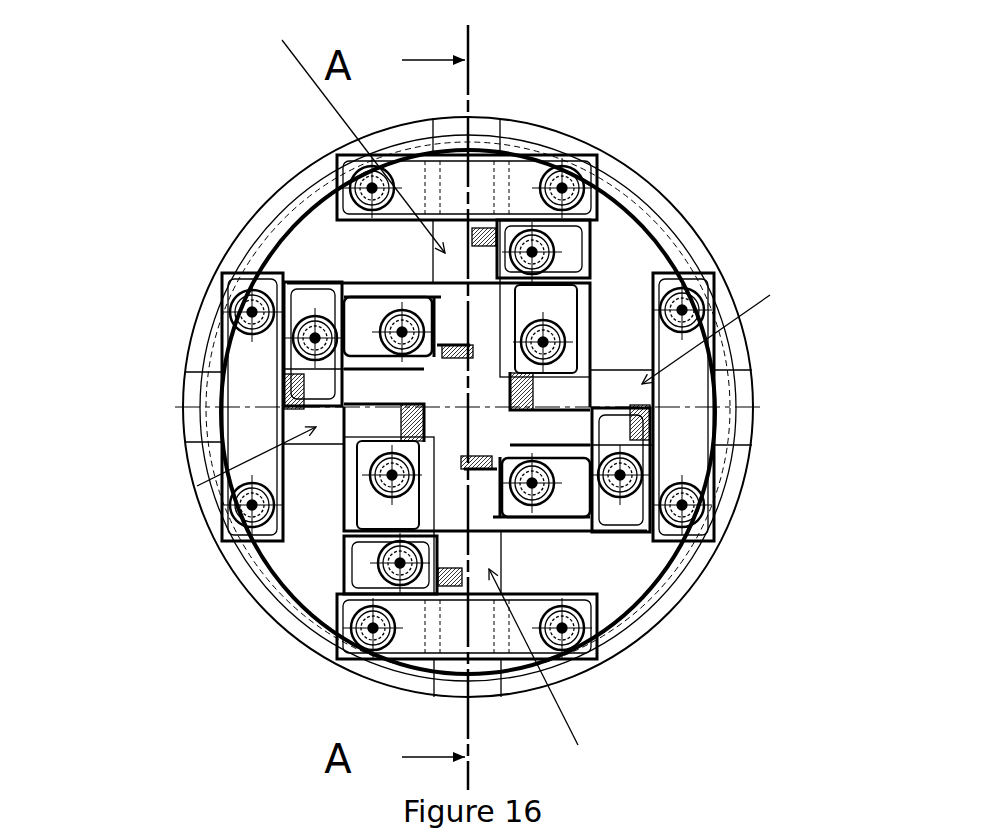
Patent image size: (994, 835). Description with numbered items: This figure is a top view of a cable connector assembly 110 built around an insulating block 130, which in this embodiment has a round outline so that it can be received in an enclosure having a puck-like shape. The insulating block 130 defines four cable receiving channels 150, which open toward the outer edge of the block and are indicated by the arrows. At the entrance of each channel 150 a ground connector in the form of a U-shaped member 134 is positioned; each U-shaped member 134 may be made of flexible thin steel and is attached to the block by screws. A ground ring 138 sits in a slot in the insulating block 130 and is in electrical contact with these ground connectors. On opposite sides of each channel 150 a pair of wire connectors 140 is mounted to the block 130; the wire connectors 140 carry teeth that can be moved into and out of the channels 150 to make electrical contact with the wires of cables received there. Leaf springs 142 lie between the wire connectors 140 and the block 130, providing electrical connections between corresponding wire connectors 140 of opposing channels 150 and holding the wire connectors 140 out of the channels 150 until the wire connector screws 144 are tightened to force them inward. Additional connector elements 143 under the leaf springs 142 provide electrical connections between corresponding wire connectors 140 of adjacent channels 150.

The cable connector assembly 110 is at (765, 126).
The insulating block 130 is at (305, 172).
The U-shaped member 134 is at (493, 177).
The ground ring 138 is at (275, 242).
The wire connector 140 is at (487, 250).
The leaf spring 142 is at (420, 300).
The connector element 143 is at (583, 432).
The wire connector screw 144 is at (575, 335).
The cable receiving channel 150 is at (282, 40).